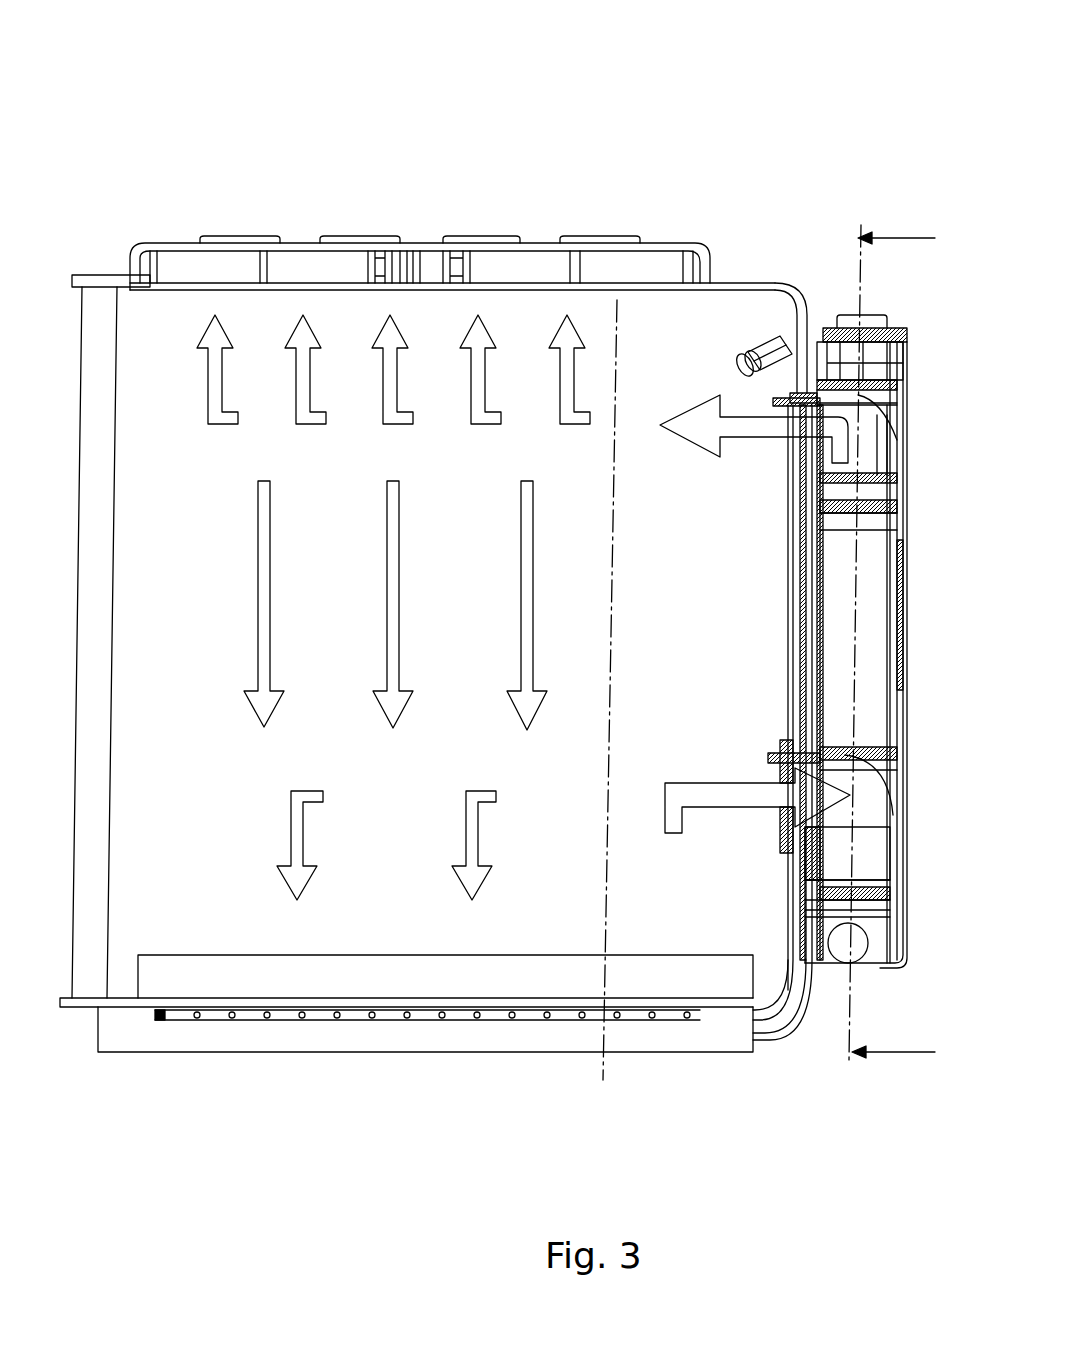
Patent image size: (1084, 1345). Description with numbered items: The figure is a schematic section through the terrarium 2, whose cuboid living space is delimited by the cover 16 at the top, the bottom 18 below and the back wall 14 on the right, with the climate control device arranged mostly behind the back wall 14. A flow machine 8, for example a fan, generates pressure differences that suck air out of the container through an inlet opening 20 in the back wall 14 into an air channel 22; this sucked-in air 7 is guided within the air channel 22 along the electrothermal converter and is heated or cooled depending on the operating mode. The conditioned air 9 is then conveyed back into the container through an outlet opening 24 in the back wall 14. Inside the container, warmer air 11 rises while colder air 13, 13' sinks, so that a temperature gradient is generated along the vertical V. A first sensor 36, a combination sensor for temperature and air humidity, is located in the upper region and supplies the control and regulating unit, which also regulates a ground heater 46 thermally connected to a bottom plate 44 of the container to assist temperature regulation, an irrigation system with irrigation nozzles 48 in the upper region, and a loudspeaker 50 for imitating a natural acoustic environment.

The terrarium 2 is at (158, 145).
The sucked-in air 7 is at (720, 790).
The flow machine 8 is at (818, 220).
The conditioned air 9 is at (754, 428).
The warmer air 11 is at (216, 388).
The colder air 13 is at (360, 605).
The colder air 13' is at (352, 845).
The back wall 14 is at (790, 622).
The cover 16 is at (76, 275).
The bottom 18 is at (64, 1010).
The inlet opening 20 is at (782, 830).
The air channel 22 is at (886, 650).
The outlet opening 24 is at (777, 463).
The first sensor 36 is at (790, 375).
The bottom plate 44 is at (362, 975).
The ground heater 46 is at (340, 1038).
The irrigation nozzles 48 is at (745, 335).
The loudspeaker 50 is at (905, 336).
The vertical V is at (608, 790).